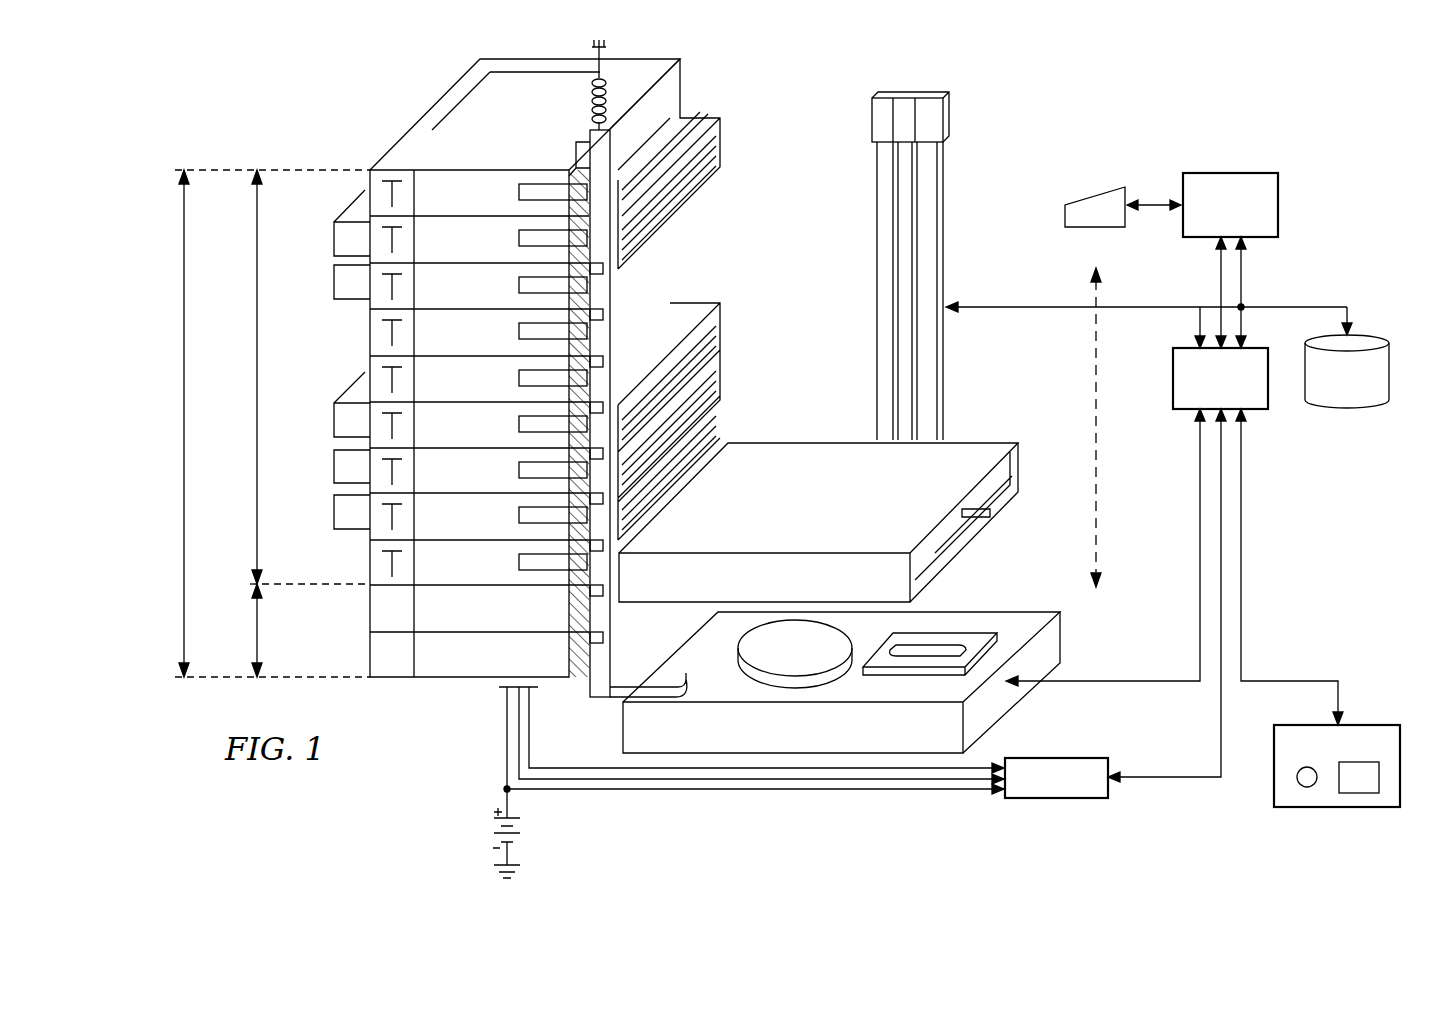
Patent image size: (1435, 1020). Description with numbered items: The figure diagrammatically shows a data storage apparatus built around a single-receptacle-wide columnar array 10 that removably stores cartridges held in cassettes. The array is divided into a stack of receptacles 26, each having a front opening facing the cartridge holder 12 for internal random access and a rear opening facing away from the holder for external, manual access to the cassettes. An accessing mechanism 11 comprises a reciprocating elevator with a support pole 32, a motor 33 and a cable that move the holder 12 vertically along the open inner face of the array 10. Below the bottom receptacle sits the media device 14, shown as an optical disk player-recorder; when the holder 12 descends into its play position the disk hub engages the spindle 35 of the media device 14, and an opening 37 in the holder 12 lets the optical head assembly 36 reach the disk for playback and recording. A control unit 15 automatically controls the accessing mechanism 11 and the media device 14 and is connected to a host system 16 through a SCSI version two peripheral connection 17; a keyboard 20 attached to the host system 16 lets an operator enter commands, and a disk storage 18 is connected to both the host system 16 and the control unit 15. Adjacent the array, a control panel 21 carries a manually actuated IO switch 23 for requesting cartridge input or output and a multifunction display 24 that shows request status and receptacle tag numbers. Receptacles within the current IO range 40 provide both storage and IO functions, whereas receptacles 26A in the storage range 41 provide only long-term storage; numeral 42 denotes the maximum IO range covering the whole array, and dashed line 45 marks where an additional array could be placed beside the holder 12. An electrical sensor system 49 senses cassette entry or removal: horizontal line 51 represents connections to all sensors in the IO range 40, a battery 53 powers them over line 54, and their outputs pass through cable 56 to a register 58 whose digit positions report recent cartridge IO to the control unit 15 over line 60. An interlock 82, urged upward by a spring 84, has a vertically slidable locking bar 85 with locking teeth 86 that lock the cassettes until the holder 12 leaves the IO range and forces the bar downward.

The columnar array 10 is at (398, 108).
The accessing mechanism 11 is at (990, 400).
The cartridge holder 12 is at (814, 496).
The media device 14 is at (998, 702).
The control unit 15 is at (1172, 378).
The host system 16 is at (1228, 172).
The SCSI-2 interface 17 is at (1212, 298).
The disk storage 18 is at (1350, 335).
The keyboard 20 is at (1098, 187).
The control panel 21 is at (1368, 725).
The IO switch 23 is at (1296, 782).
The multifunction display 24 is at (1378, 792).
The receptacle 26 is at (366, 343).
The storage receptacle 26A is at (366, 613).
The support pole 32 is at (896, 280).
The motor 33 is at (875, 120).
The spindle 35 is at (808, 662).
The optical head assembly 36 is at (950, 640).
The opening 37 is at (968, 518).
The IO range 40 is at (255, 352).
The storage range 41 is at (255, 630).
The maximum IO range 42 is at (180, 465).
The dashed line 45 is at (1090, 295).
The electrical sensor system 49 is at (822, 800).
The horizontal line 51 is at (505, 690).
The battery 53 is at (494, 828).
The power line 54 is at (507, 758).
The cable 56 is at (590, 790).
The register 58 is at (1057, 800).
The line 60 is at (1170, 775).
The interlock 82 is at (614, 307).
The spring 84 is at (606, 86).
The locking bar 85 is at (605, 200).
The locking teeth 86 is at (580, 160).